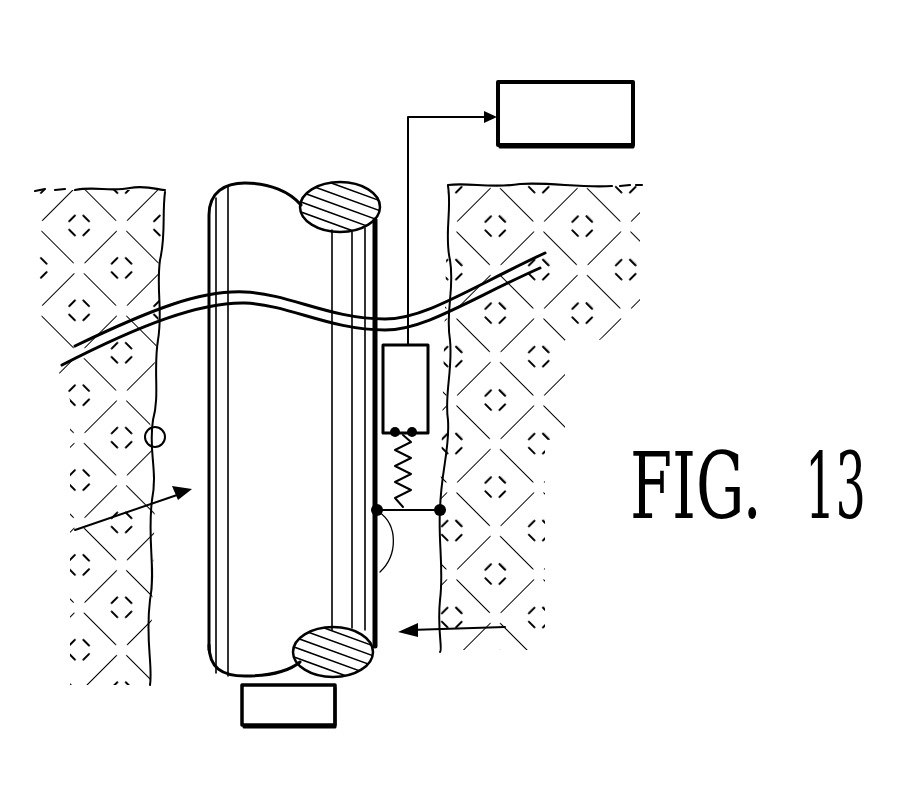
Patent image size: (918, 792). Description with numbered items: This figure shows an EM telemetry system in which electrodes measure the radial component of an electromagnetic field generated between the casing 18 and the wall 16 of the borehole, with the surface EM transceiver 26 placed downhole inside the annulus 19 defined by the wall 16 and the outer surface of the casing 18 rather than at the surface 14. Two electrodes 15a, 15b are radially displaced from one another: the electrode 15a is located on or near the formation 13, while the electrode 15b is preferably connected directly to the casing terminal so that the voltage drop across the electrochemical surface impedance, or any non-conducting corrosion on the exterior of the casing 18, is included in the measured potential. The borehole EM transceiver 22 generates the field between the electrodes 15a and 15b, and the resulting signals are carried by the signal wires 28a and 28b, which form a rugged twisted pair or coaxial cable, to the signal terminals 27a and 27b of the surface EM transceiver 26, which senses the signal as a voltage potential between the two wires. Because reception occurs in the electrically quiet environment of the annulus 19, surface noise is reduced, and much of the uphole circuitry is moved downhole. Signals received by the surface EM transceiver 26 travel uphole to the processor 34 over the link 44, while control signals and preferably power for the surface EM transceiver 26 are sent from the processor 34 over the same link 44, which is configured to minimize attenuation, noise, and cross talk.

The formation 13 is at (130, 282).
The surface 14 is at (75, 195).
The electrode 15a is at (443, 516).
The electrode 15b is at (377, 511).
The wall of the borehole 16 is at (145, 437).
The casing 18 is at (230, 590).
The annulus 19 is at (309, 569).
The borehole EM transceiver 22 is at (335, 700).
The surface EM transceiver 26 is at (428, 375).
The signal terminal 27a is at (396, 462).
The signal terminal 27b is at (414, 430).
The second signal wire 28a is at (442, 505).
The signal wire 28b is at (380, 572).
The processor 34 is at (600, 82).
The link 44 is at (405, 155).